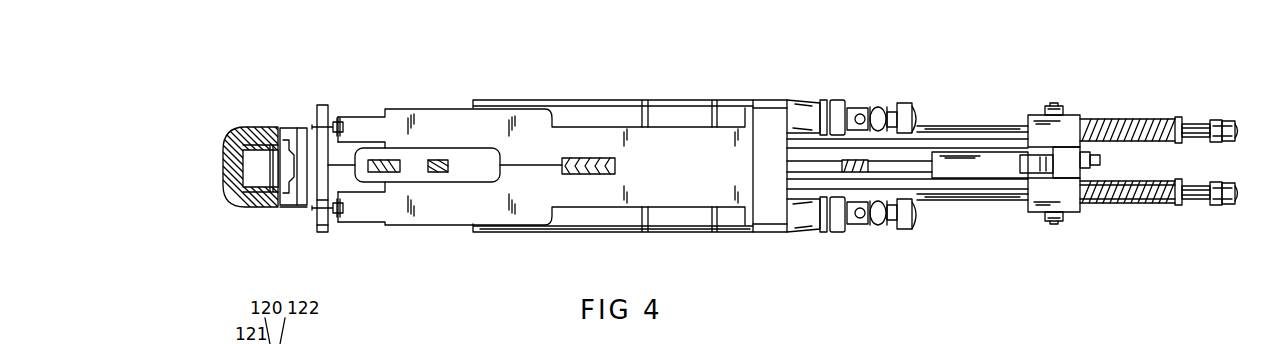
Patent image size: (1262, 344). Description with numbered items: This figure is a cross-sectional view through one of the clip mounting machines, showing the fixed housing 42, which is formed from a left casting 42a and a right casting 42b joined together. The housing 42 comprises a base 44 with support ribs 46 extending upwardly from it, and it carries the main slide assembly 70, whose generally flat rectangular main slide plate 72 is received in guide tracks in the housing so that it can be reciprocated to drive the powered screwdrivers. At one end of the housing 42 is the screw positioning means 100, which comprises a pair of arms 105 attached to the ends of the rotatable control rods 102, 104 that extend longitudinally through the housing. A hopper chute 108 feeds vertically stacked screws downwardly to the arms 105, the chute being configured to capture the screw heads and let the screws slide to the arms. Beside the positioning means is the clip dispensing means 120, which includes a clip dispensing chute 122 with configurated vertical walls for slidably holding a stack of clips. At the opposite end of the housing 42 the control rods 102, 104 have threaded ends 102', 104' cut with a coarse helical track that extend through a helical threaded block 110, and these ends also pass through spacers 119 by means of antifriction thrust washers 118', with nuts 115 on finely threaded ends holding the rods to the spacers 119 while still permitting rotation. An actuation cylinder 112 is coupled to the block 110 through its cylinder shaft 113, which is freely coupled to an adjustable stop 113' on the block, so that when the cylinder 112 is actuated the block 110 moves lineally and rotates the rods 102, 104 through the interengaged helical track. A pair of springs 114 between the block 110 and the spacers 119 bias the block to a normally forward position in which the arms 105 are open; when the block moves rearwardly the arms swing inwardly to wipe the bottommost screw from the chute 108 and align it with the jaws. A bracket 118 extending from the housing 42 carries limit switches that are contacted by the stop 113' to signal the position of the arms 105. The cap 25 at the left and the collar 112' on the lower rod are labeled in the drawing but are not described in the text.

The cap 25 is at (222, 168).
The clip dispensing chute 122 is at (290, 128).
The screw positioning means 100 is at (316, 100).
The arms 105 is at (323, 226).
The hopper chute 108 is at (339, 115).
The right casting 42b is at (431, 124).
The left casting 42a is at (445, 223).
The housing 42 is at (766, 130).
The support ribs 46 is at (520, 100).
The base 44 is at (587, 233).
The main slide plate 72 is at (806, 164).
The main slide assembly 70 is at (833, 156).
The control rod 104 is at (972, 113).
The control rod 102 is at (972, 217).
The actuation cylinder 112 is at (980, 128).
The cylinder shaft 113 is at (1036, 124).
The helical threaded block 110 is at (1070, 115).
The adjustable stop 113' is at (1099, 117).
The threaded end 104' is at (1127, 116).
The threaded end 102' is at (1119, 220).
The springs 114 is at (1143, 118).
The bracket 118 is at (1127, 225).
The antifriction thrust washers 118' is at (1177, 92).
The lower collar 112' is at (1187, 209).
The spacers 119 is at (1203, 124).
The nuts 115 is at (1225, 120).
The clip dispensing means 120 is at (289, 212).